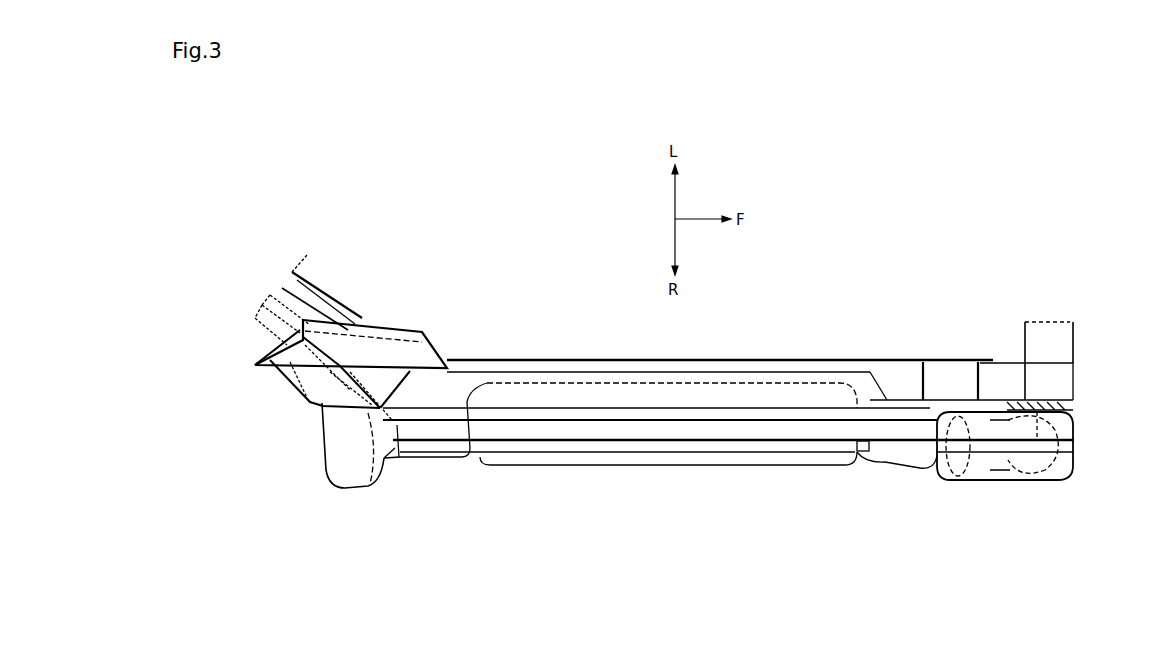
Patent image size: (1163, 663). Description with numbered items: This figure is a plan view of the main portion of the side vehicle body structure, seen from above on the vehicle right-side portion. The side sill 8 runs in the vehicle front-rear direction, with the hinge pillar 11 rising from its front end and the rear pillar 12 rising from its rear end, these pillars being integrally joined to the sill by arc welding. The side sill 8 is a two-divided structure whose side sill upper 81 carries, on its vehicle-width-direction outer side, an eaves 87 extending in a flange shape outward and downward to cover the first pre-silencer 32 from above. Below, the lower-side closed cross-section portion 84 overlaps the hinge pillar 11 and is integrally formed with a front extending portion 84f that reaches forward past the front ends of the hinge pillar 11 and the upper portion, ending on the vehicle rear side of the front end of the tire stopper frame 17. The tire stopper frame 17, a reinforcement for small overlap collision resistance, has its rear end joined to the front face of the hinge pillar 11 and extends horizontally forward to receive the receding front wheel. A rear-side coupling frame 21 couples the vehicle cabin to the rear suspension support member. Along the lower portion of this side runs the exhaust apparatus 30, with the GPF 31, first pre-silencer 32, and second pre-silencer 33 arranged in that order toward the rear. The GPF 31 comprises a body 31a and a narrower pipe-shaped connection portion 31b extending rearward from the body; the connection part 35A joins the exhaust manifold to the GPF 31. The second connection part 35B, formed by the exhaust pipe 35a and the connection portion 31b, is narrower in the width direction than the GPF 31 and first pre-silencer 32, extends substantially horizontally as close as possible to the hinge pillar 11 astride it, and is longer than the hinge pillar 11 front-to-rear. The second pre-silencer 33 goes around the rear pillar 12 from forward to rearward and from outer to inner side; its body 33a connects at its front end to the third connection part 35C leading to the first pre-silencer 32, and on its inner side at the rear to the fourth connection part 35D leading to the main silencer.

The side sill 8 is at (604, 358).
The hinge pillar 11 is at (958, 362).
The rear pillar 12 is at (385, 325).
The tire stopper frame 17 is at (1010, 370).
The rear-side coupling frame 21 is at (338, 303).
The exhaust apparatus 30 is at (810, 466).
The GPF 31 is at (1052, 478).
The body 31a is at (995, 472).
The connection portion 31b is at (900, 466).
The first pre-silencer 32 is at (556, 466).
The second pre-silencer 33 is at (324, 458).
The body 33a is at (380, 486).
The exhaust pipe 35a is at (1000, 412).
The connection part 35A is at (1074, 348).
The second connection part 35B is at (893, 522).
The third connection part 35C is at (445, 457).
The fourth connection part 35D is at (300, 340).
The side sill upper 81 is at (735, 443).
The lower-side closed cross-section portion 84 is at (972, 482).
The front extending portion 84f is at (976, 482).
The eaves 87 is at (680, 442).